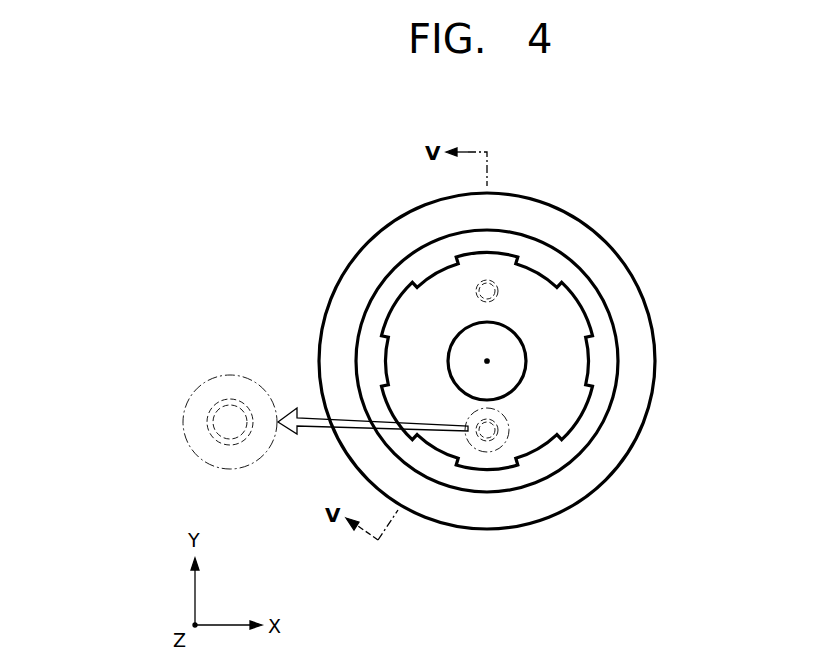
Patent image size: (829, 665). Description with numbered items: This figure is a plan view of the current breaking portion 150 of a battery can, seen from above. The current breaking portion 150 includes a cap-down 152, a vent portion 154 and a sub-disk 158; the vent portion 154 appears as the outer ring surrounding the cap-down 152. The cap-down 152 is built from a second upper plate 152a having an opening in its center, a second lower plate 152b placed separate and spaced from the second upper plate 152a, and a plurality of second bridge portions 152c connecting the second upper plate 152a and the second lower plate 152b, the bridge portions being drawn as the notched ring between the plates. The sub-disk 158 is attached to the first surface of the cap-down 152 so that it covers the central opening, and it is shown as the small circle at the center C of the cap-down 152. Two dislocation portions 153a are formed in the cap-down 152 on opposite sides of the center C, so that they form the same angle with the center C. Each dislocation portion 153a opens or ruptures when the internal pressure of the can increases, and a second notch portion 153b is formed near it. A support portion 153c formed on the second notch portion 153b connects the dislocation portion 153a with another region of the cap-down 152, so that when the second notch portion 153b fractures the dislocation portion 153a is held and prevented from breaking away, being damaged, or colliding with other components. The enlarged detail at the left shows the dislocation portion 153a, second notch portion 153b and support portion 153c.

The current breaking portion 150 is at (645, 193).
The cap-down 152 is at (342, 182).
The second upper plate 152a is at (425, 257).
The second lower plate 152b is at (412, 355).
The second bridge portions 152c is at (404, 298).
The vent portion 154 is at (638, 388).
The sub-disk 158 is at (503, 370).
The center C is at (487, 361).
The dislocation portion 153a is at (220, 420).
The second notch portion 153b is at (210, 432).
The support portion 153c is at (233, 397).